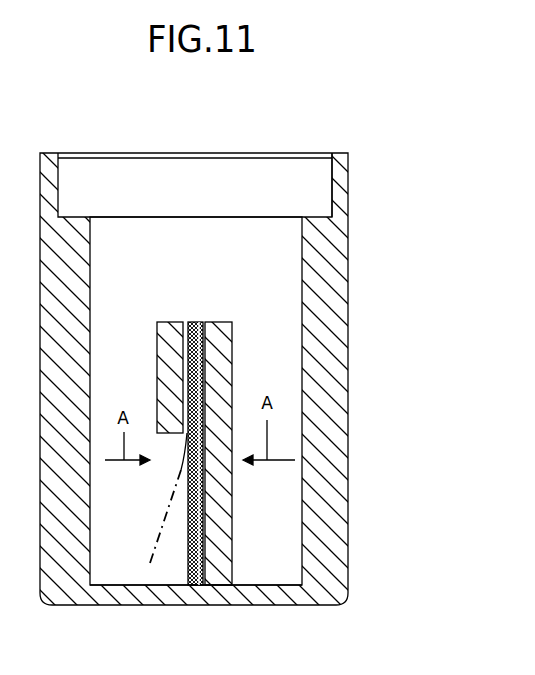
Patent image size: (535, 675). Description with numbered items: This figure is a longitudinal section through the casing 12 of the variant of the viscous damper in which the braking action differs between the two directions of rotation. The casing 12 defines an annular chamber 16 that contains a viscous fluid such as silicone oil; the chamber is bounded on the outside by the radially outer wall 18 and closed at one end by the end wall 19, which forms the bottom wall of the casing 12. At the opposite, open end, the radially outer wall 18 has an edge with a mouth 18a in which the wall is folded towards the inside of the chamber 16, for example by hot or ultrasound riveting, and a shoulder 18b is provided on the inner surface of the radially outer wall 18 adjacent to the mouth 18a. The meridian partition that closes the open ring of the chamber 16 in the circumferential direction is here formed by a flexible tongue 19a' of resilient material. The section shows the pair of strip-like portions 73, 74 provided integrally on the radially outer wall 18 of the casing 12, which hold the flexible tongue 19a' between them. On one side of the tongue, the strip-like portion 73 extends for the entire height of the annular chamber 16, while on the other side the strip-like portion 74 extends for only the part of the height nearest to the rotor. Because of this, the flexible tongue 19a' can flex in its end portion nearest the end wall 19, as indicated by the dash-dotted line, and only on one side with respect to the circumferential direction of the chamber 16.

The casing 12 is at (400, 219).
The annular chamber 16 is at (280, 517).
The radially outer wall 18 is at (335, 380).
The mouth 18a is at (298, 182).
The shoulder 18b is at (312, 213).
The end wall 19 is at (274, 597).
The flexible tongue 19a' is at (297, 429).
The strip-like portion 73 is at (217, 322).
The strip-like portion 74 is at (162, 322).